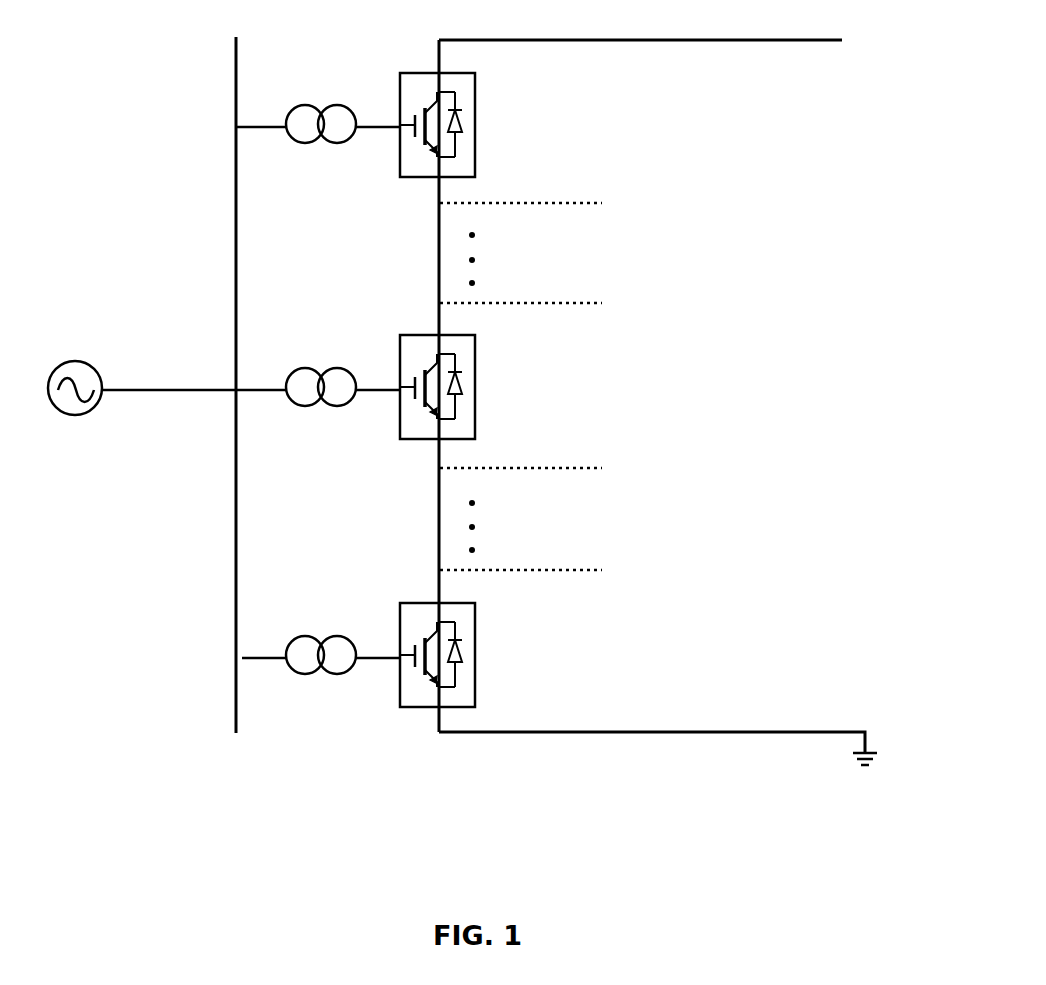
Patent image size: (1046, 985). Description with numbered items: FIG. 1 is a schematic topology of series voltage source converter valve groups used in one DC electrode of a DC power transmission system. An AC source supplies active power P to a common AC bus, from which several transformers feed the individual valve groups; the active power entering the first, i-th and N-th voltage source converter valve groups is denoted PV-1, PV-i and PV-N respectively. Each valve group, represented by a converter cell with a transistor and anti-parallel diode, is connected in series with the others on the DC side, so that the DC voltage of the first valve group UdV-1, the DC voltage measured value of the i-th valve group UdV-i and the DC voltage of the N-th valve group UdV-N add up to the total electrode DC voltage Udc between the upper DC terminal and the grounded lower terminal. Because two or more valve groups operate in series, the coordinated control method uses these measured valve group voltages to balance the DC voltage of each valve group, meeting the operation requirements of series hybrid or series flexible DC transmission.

The active power P is at (214, 367).
The active power of first valve group PV-1 is at (348, 88).
The active power of i-th valve group PV-i is at (350, 351).
The active power of N-th valve group PV-N is at (351, 612).
The DC voltage of first valve group UdV-1 is at (537, 55).
The DC voltage measured value of valve group UdV-i is at (537, 316).
The DC voltage of N-th valve group UdV-N is at (537, 583).
The DC voltage of DC electrode Udc is at (728, 54).